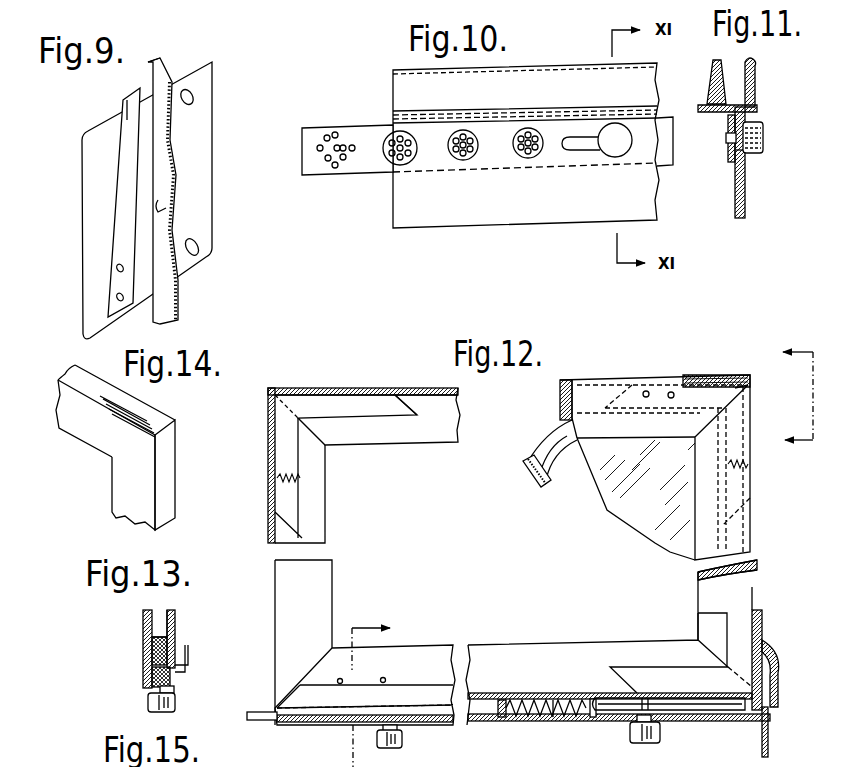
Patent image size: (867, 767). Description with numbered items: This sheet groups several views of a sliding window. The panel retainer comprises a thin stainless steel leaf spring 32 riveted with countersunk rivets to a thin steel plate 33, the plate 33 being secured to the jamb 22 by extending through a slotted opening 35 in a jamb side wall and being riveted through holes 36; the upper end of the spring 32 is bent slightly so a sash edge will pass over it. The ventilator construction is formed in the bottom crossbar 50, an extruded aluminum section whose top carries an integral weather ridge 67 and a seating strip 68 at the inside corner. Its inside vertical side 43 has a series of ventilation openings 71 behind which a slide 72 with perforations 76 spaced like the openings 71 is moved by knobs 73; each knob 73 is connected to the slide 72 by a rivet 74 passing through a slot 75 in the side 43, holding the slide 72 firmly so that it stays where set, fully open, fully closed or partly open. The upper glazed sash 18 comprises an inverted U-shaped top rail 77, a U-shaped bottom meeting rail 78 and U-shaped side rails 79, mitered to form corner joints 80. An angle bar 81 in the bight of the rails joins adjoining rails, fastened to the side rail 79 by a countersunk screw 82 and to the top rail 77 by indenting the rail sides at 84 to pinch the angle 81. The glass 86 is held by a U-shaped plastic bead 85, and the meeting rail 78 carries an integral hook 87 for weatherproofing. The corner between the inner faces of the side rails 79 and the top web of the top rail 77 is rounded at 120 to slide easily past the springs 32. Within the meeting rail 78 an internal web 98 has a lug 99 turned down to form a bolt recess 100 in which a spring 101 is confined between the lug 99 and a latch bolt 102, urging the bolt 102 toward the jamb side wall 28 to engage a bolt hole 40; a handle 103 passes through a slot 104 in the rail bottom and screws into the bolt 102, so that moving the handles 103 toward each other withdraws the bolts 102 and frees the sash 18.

In FIG. 12, the glazed sash 18 is at (530, 555).
In FIG. 9, the jamb 22 is at (173, 164).
In FIG. 12, the side wall portion 28 is at (769, 737).
In FIG. 9, the leaf spring 32 is at (126, 124).
In FIG. 9, the plate 33 is at (97, 196).
In FIG. 9, the slotted opening 35 is at (162, 207).
In FIG. 9, the hole 36 is at (192, 98).
In FIG. 12, the bolt hole 40 is at (778, 672).
In FIG. 10, the inside vertical side 43 is at (398, 202).
In FIG. 11, the inside vertical side 43 is at (746, 185).
In FIG. 10, the bottom crossbar 50 is at (525, 212).
In FIG. 11, the bottom crossbar 50 is at (735, 187).
In FIG. 11, the weather ridge 67 is at (711, 70).
In FIG. 10, the seating strip 68 is at (580, 68).
In FIG. 11, the seating strip 68 is at (754, 66).
In FIG. 10, the ventilation opening 71 is at (448, 159).
In FIG. 10, the slide 72 is at (350, 160).
In FIG. 11, the slide 72 is at (727, 130).
In FIG. 10, the knob 73 is at (618, 156).
In FIG. 11, the knob 73 is at (764, 133).
In FIG. 11, the rivet 74 is at (728, 141).
In FIG. 10, the slot 75 is at (570, 152).
In FIG. 10, the perforation 76 is at (354, 149).
In FIG. 14, the top rail 77 is at (77, 425).
In FIG. 12, the top rail 77 is at (560, 402).
In FIG. 13, the meeting rail 78 is at (176, 628).
In FIG. 12, the meeting rail 78 is at (482, 656).
In FIG. 14, the side rail 79 is at (120, 497).
In FIG. 12, the side rail 79 is at (337, 534).
In FIG. 14, the corner joint 80 is at (130, 454).
In FIG. 12, the corner joint 80 is at (735, 403).
In FIG. 13, the angle bar 81 is at (148, 636).
In FIG. 12, the angle bar 81 is at (337, 400).
In FIG. 12, the countersunk screw 82 is at (271, 478).
In FIG. 12, the indentation 84 is at (670, 392).
In FIG. 12, the plastic bead 85 is at (526, 473).
In FIG. 12, the glass 86 is at (645, 516).
In FIG. 13, the hook 87 is at (189, 661).
In FIG. 12, the hook 87 is at (429, 686).
In FIG. 13, the internal web 98 is at (150, 650).
In FIG. 12, the internal web 98 is at (551, 700).
In FIG. 12, the lug 99 is at (502, 700).
In FIG. 12, the bolt recess 100 is at (571, 699).
In FIG. 12, the spring 101 is at (546, 718).
In FIG. 13, the latch bolt 102 is at (151, 676).
In FIG. 12, the latch bolt 102 is at (246, 722).
In FIG. 13, the handle 103 is at (148, 705).
In FIG. 12, the handle 103 is at (403, 740).
In FIG. 13, the slot 104 is at (176, 690).
In FIG. 12, the slot 104 is at (620, 722).
In FIG. 14, the rounded corner 120 is at (153, 428).
In FIG. 12, the rounded corner 120 is at (733, 378).